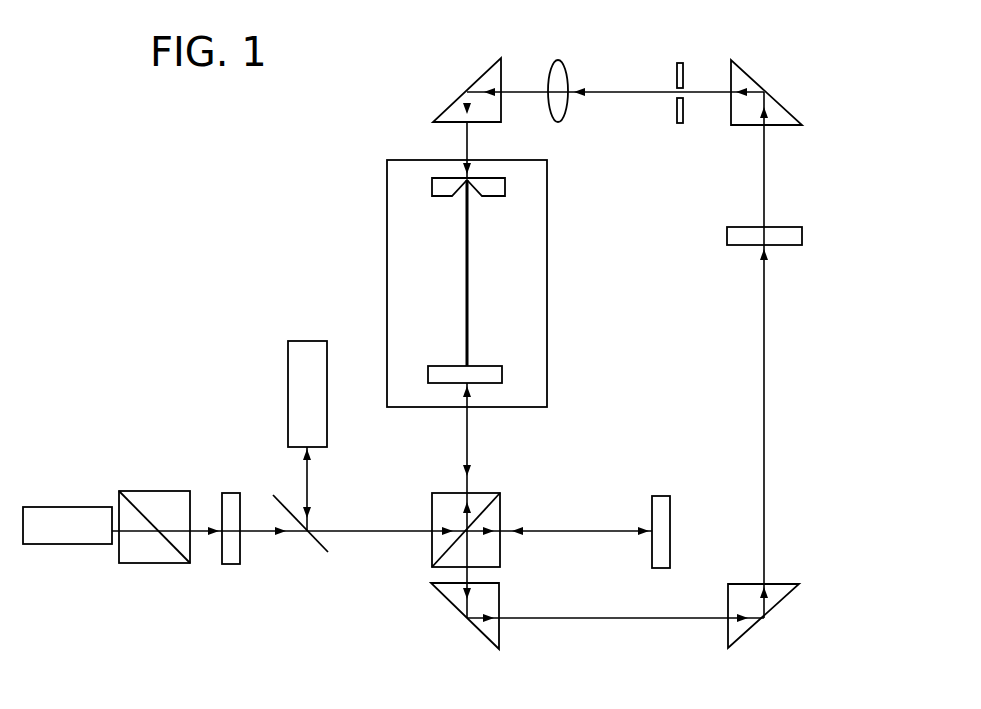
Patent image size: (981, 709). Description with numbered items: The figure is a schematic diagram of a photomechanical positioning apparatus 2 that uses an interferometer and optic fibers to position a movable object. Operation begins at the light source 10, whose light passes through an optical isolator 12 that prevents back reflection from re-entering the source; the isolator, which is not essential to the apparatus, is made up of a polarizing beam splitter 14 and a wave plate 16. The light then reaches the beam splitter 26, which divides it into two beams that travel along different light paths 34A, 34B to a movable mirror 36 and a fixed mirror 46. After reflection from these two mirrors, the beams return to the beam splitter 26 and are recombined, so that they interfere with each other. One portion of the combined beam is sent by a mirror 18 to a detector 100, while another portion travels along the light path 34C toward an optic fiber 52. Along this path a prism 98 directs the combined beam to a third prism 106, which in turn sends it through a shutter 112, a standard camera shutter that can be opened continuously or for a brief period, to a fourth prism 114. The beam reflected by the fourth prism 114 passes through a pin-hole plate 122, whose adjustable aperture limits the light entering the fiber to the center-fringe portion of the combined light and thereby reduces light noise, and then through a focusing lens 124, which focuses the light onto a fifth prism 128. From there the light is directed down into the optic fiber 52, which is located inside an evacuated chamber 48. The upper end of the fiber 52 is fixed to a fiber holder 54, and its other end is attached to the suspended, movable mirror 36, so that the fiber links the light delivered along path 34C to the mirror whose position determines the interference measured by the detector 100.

The photomechanical positioning apparatus 2 is at (612, 64).
The light source 10 is at (61, 505).
The optical isolator 12 is at (195, 578).
The polarizing beam splitter 14 is at (155, 490).
The wave plate 16 is at (228, 490).
The mirror 18 is at (318, 543).
The beam splitter 26 is at (487, 493).
The light path 34A is at (465, 442).
The light path 34B is at (585, 531).
The light path 34C is at (612, 621).
The movable mirror 36 is at (443, 366).
The fixed mirror 46 is at (671, 520).
The evacuated chamber 48 is at (387, 278).
The optic fiber 52 is at (466, 260).
The fiber holder 54 is at (432, 190).
The prism 98 is at (500, 600).
The detector 100 is at (288, 363).
The third prism 106 is at (740, 584).
The shutter 112 is at (742, 250).
The fourth prism 114 is at (745, 127).
The pin-hole plate 122 is at (678, 110).
The focusing lens 124 is at (570, 100).
The fifth prism 128 is at (452, 103).